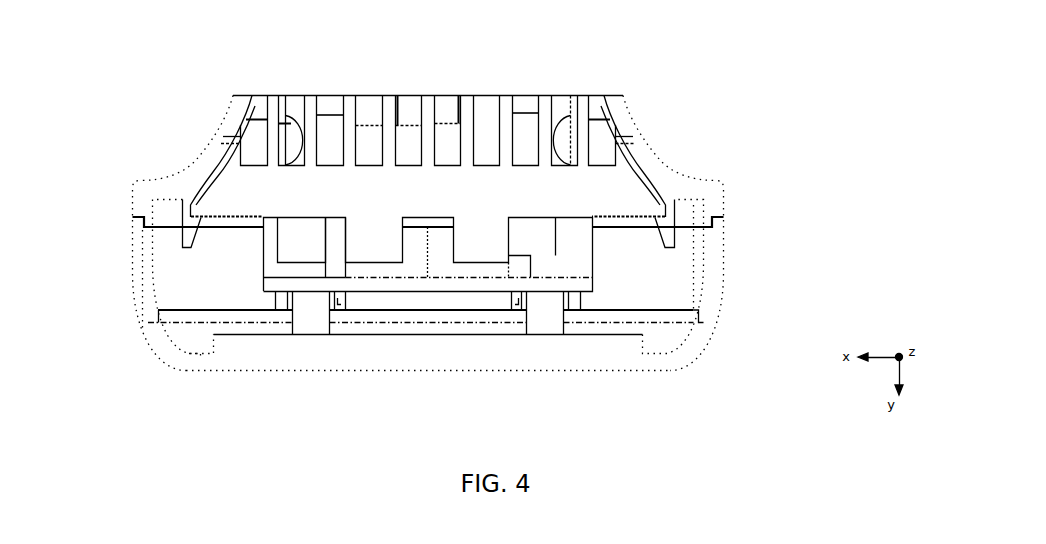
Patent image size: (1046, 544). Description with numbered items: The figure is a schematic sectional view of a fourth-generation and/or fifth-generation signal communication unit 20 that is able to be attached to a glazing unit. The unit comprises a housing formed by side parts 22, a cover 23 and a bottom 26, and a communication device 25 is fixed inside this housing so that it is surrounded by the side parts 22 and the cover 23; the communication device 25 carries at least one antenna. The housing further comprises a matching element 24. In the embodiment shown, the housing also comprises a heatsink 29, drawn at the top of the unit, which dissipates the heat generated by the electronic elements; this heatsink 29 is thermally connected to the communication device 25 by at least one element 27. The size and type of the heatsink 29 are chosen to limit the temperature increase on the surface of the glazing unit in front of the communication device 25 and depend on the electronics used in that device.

The 4G and/or 5G signal communication unit 20 is at (690, 77).
The side parts 22 is at (142, 262).
The cover 23 is at (195, 173).
The matching element 24 is at (293, 343).
The communication device 25 is at (390, 282).
The bottom 26 is at (175, 352).
The element 27 is at (531, 256).
The heatsink 29 is at (507, 106).